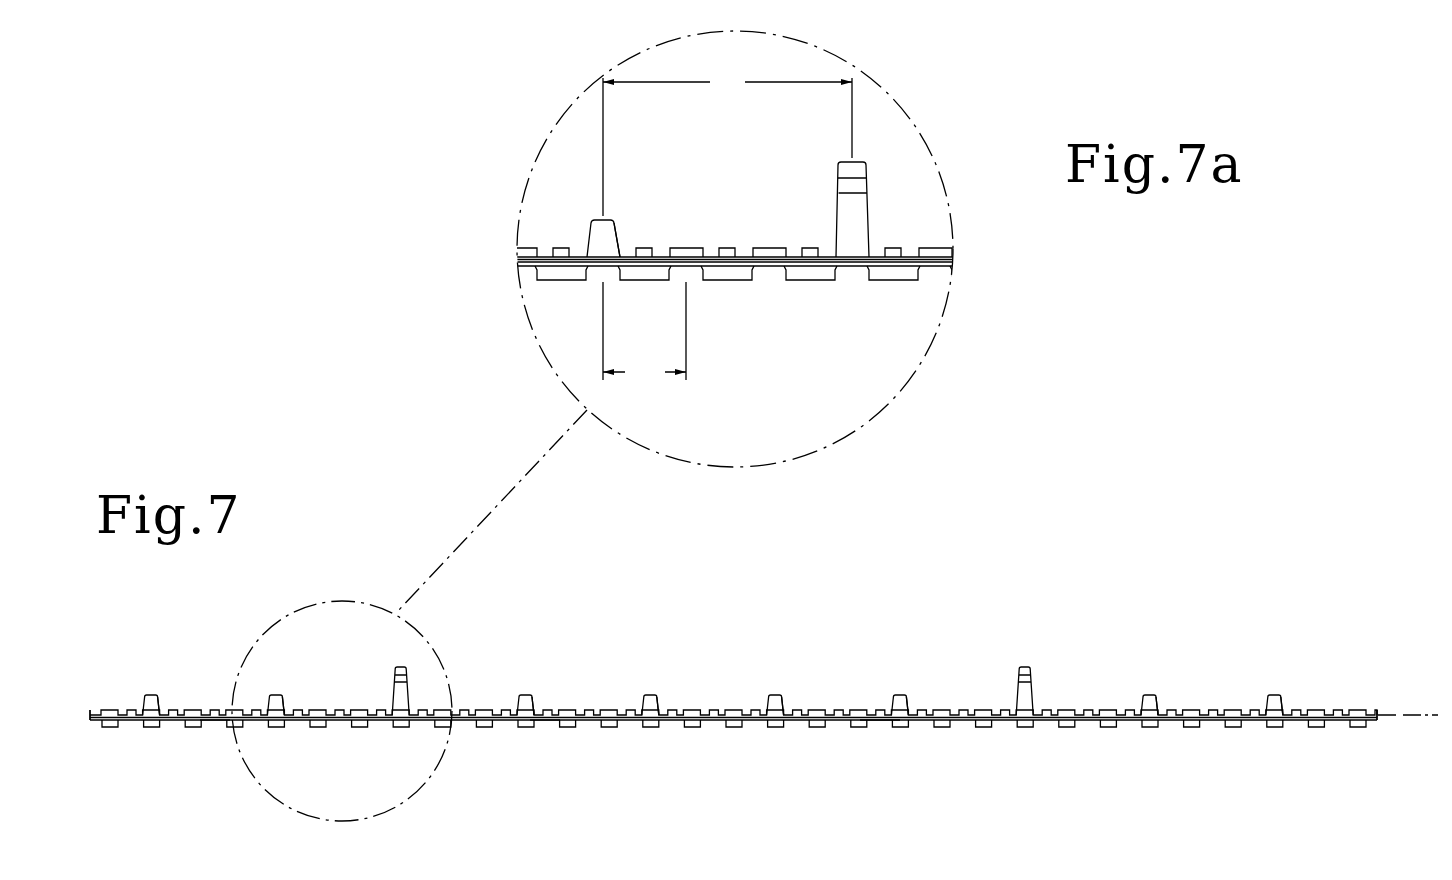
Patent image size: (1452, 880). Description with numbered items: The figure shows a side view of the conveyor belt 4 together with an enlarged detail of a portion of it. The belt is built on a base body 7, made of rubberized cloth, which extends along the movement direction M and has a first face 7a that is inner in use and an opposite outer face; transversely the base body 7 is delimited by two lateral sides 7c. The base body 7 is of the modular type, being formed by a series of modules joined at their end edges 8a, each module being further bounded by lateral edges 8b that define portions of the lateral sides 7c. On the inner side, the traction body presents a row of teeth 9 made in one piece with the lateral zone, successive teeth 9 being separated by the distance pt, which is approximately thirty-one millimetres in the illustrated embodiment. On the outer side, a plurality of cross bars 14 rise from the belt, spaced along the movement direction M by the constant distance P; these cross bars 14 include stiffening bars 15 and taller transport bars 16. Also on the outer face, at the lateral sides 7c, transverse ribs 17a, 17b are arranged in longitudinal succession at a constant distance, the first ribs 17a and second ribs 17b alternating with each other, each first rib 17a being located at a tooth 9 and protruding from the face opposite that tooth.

In FIG. 7, the conveyor belt 4 is at (884, 775).
In FIG. 7, the base body 7 is at (692, 722).
In FIG. 7, the first face 7a is at (219, 745).
In FIG. 7A, the lateral sides 7c is at (855, 268).
In FIG. 7, the end edges 8a is at (90, 715).
In FIG. 7, the lateral edges 8b is at (547, 720).
In FIG. 7, the teeth 9 is at (195, 727).
In FIG. 7A, the teeth 9 is at (847, 280).
In FIG. 7, the cross bars 14 is at (153, 680).
In FIG. 7A, the cross bars 14 is at (620, 200).
In FIG. 7, the stiffening bars 15 is at (159, 697).
In FIG. 7A, the stiffening bars 15 is at (612, 231).
In FIG. 7, the transport bars 16 is at (393, 698).
In FIG. 7A, the transport bars 16 is at (843, 222).
In FIG. 7A, the first ribs 17a is at (620, 248).
In FIG. 7A, the second ribs 17b is at (647, 250).
In FIG. 7, the direction of movement M is at (1411, 719).
In FIG. 7A, the distance between cross bars P is at (727, 142).
In FIG. 7A, the distance between successive teeth pt is at (644, 334).